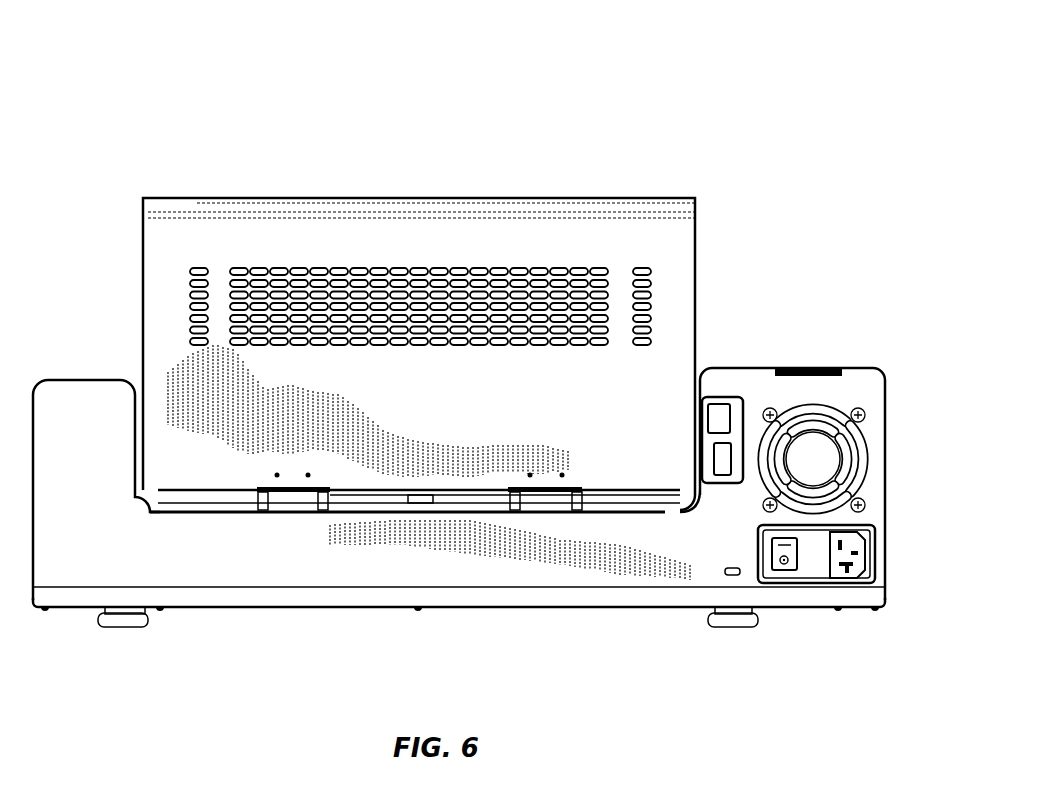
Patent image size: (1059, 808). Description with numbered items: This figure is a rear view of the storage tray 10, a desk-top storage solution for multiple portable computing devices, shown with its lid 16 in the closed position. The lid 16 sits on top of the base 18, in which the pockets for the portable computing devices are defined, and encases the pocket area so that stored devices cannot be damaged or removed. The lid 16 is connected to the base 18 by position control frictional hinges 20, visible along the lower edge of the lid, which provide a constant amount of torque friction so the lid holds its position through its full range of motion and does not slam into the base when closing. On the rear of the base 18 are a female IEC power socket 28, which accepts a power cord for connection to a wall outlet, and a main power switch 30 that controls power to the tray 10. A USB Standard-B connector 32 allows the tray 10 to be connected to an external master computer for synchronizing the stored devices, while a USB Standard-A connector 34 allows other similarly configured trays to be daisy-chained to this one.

The storage tray 10 is at (618, 88).
The lid 16 is at (165, 253).
The base 18 is at (298, 568).
The position control frictional hinges 20 is at (538, 498).
The IEC power socket 28 is at (838, 555).
The main power switch 30 is at (782, 565).
The USB Standard-B connector 32 is at (712, 415).
The USB Standard-A connector 34 is at (727, 458).